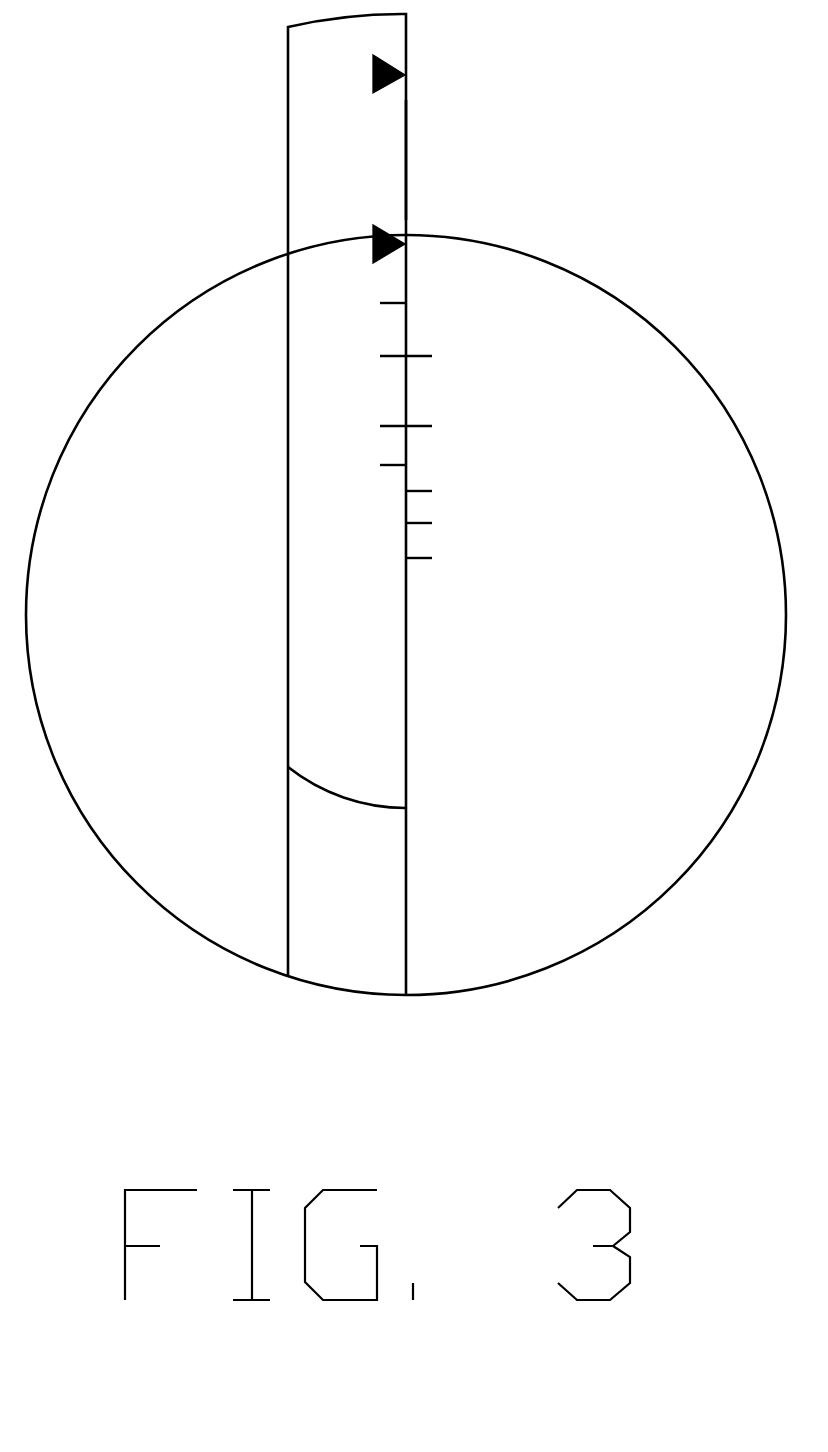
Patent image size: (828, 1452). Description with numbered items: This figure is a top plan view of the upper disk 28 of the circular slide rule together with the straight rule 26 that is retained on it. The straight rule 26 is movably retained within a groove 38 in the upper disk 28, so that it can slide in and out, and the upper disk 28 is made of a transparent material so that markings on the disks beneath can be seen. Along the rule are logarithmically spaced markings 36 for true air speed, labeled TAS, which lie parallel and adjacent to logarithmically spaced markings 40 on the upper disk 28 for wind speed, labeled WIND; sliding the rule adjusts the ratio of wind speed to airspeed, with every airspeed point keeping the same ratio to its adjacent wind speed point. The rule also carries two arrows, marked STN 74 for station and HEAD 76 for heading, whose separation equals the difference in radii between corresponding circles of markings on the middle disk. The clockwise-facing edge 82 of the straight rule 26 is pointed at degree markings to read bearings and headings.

The straight rule 26 is at (287, 100).
The upper disk 28 is at (203, 296).
The logarithmically spaced markings for true air speed 36 is at (389, 367).
The groove 38 is at (287, 880).
The logarithmically spaced markings for wind speed 40 is at (478, 430).
The STN arrow 74 is at (392, 252).
The HEAD arrow 76 is at (390, 80).
The clockwise-facing edge 82 is at (405, 143).